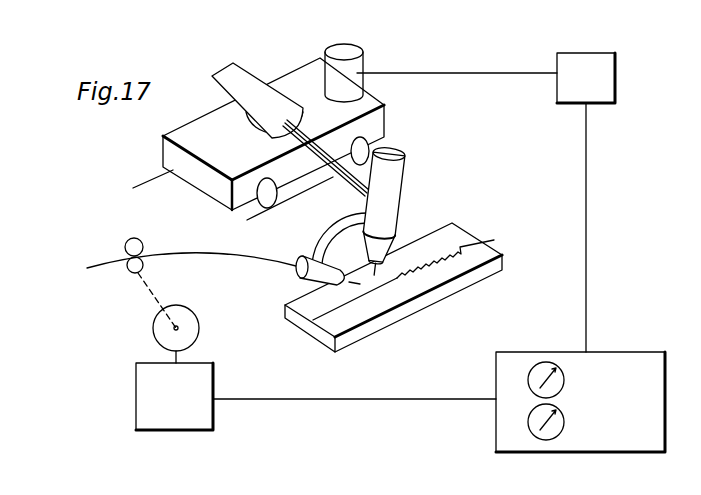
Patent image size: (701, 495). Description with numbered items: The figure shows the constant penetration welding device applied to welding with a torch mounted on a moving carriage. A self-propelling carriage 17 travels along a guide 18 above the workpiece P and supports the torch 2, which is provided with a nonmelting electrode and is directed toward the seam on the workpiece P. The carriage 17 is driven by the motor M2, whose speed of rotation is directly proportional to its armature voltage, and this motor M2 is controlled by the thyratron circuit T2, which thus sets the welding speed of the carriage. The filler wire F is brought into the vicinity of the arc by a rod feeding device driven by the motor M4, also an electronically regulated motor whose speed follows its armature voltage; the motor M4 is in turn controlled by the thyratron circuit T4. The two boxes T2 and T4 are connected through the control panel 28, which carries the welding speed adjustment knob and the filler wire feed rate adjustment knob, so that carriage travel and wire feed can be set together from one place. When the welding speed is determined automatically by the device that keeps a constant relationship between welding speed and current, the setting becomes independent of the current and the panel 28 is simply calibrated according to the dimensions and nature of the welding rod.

The self-propelling carriage 17 is at (255, 118).
The guide rail 18 is at (155, 183).
The torch 2 is at (393, 198).
The control panel 28 is at (618, 362).
The carriage motor M2 is at (323, 64).
The rod feeding device motor M4 is at (195, 333).
The thyratron circuit T2 is at (486, 202).
The thyratron circuit T4 is at (316, 396).
The filler wire F is at (182, 252).
The workpiece P is at (478, 248).